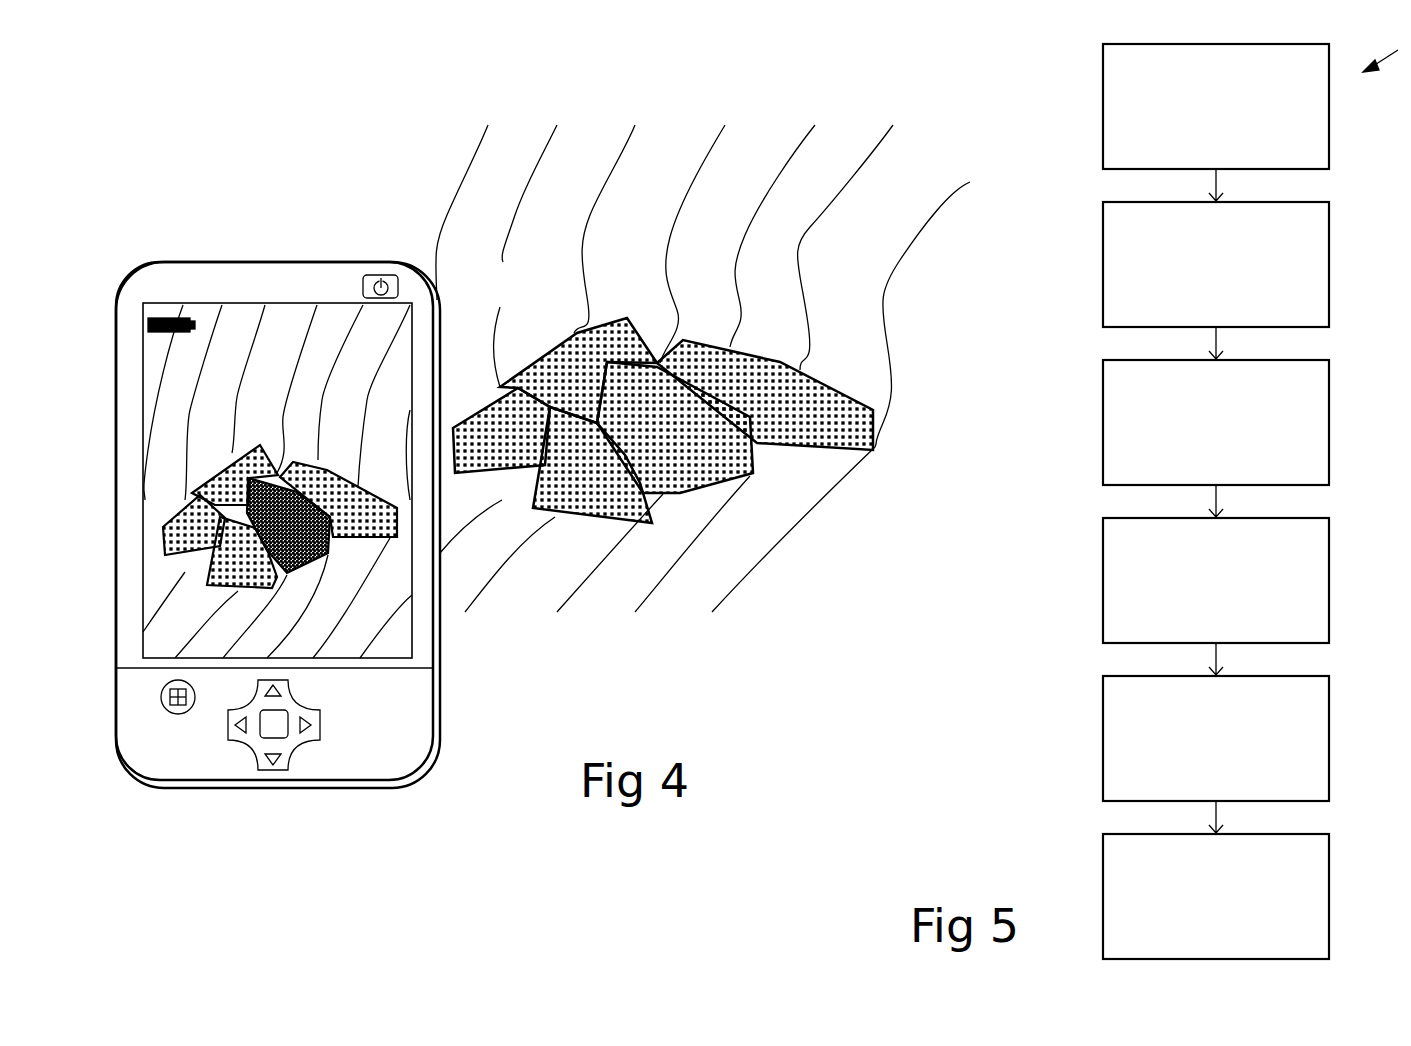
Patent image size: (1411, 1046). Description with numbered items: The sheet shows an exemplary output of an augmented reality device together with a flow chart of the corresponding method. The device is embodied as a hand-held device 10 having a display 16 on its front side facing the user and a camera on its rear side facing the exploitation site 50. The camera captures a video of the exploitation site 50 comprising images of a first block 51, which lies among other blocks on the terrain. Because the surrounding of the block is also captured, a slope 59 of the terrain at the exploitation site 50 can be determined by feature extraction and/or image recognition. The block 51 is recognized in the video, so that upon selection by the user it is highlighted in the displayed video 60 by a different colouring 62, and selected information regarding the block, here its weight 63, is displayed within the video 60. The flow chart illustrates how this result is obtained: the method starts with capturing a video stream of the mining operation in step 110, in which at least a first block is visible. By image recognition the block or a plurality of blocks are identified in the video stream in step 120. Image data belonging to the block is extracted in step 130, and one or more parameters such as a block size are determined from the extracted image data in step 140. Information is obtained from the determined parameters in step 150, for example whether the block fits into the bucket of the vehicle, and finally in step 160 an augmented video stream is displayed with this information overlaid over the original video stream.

In FIG. 4, the hand-held device 10 is at (199, 233).
In FIG. 4, the display 16 is at (287, 303).
In FIG. 4, the exploitation site 50 is at (663, 425).
In FIG. 4, the first block 51 is at (717, 457).
In FIG. 4, the slope 59 is at (926, 154).
In FIG. 4, the displayed video 60 is at (324, 529).
In FIG. 4, the different colouring 62 is at (293, 583).
In FIG. 4, the weight 63 is at (297, 545).
In FIG. 5, the capturing step 110 is at (1103, 83).
In FIG. 5, the identifying step 120 is at (1103, 241).
In FIG. 5, the extracting step 130 is at (1103, 399).
In FIG. 5, the parameter determining step 140 is at (1103, 557).
In FIG. 5, the information obtaining step 150 is at (1103, 715).
In FIG. 5, the displaying step 160 is at (1103, 873).